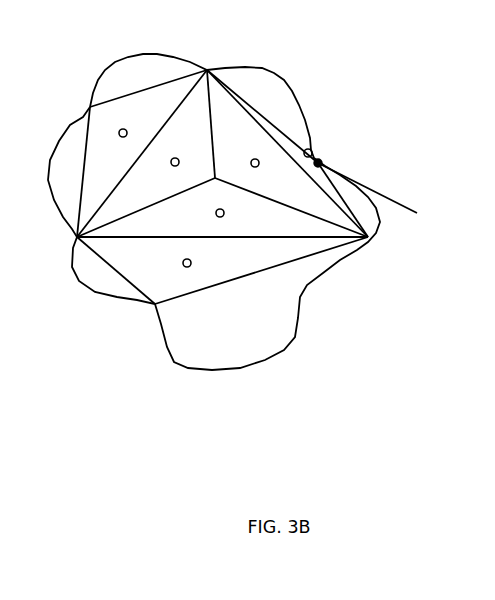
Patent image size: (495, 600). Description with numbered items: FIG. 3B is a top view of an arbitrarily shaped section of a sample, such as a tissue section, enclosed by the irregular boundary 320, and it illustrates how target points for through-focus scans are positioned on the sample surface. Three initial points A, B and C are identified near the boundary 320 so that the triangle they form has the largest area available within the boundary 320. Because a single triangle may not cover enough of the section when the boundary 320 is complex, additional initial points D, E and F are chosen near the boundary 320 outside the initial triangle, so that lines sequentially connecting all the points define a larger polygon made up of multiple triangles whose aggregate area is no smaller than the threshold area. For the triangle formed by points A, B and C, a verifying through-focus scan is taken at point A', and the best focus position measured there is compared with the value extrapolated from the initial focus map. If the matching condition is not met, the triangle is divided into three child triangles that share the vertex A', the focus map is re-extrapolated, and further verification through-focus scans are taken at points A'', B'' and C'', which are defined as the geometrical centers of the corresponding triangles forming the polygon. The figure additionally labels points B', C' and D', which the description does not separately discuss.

The boundary 320 is at (283, 73).
The initial point A is at (287, 138).
The initial point B is at (209, 158).
The initial point C is at (281, 233).
The additional initial point D is at (132, 153).
The additional initial point E is at (331, 147).
The additional initial point F is at (116, 284).
The verifying scan point A' is at (222, 124).
The point D prime D' is at (384, 194).
The sample point B prime B' is at (113, 146).
The verification point A'' is at (162, 175).
The verification point B'' is at (267, 172).
The verification point C'' is at (204, 216).
The sample point C prime C' is at (204, 256).